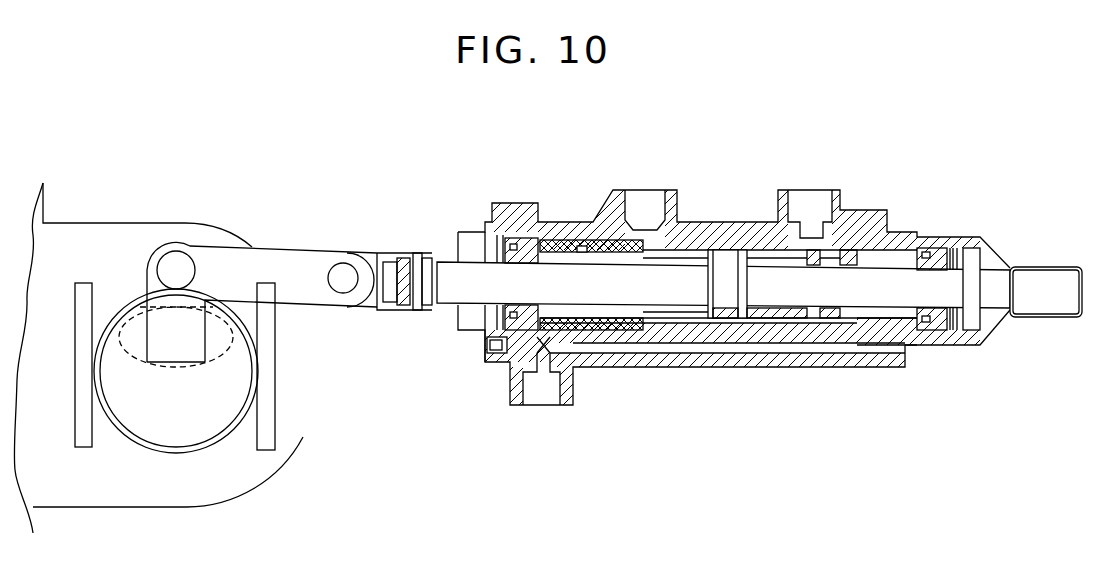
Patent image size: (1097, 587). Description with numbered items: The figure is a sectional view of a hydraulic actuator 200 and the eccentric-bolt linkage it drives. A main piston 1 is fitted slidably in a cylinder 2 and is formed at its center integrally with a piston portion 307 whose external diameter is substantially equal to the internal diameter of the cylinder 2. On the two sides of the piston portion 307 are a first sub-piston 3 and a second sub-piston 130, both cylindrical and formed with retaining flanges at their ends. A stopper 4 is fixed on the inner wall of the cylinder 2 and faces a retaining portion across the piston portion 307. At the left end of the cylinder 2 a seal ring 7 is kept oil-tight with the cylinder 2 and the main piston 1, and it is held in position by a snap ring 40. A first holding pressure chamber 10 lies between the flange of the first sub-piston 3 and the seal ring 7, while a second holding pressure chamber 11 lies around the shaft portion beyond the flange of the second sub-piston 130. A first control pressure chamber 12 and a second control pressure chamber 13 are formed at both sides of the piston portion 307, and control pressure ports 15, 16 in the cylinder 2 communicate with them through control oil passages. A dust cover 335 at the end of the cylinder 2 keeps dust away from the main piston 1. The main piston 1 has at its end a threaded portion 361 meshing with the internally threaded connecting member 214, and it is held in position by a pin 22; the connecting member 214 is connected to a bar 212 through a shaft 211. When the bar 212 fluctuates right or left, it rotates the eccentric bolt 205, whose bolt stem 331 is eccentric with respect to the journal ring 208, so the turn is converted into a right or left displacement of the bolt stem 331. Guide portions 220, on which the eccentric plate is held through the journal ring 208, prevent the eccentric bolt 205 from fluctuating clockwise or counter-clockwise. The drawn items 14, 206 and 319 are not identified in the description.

The main piston 1 is at (472, 290).
The cylinder 2 is at (672, 330).
The first sub-piston 3 is at (693, 262).
The stopper 4 is at (598, 242).
The seal ring 7 is at (520, 240).
The first holding pressure chamber 10 is at (588, 331).
The second holding pressure chamber 11 is at (897, 320).
The first control pressure chamber 12 is at (697, 320).
The second control pressure chamber 13 is at (780, 320).
The bottom port 14 is at (537, 395).
The control pressure port 15 is at (643, 200).
The control pressure port 16 is at (818, 205).
The pin 22 is at (418, 254).
The snap ring 40 is at (491, 350).
The second sub-piston 130 is at (862, 250).
The actuator 200 is at (414, 323).
The eccentric bolt 205 is at (207, 428).
The bracket 206 is at (55, 493).
The journal ring 208 is at (181, 452).
The shaft 211 is at (343, 264).
The bar 212 is at (295, 255).
The connecting member 214 is at (381, 308).
The guide portions 220 is at (92, 343).
The piston portion 307 is at (745, 262).
The cam / eccentric 319 is at (120, 368).
The bolt stem 331 is at (155, 365).
The dust cover 335 is at (1043, 318).
The threaded portion 361 is at (403, 258).